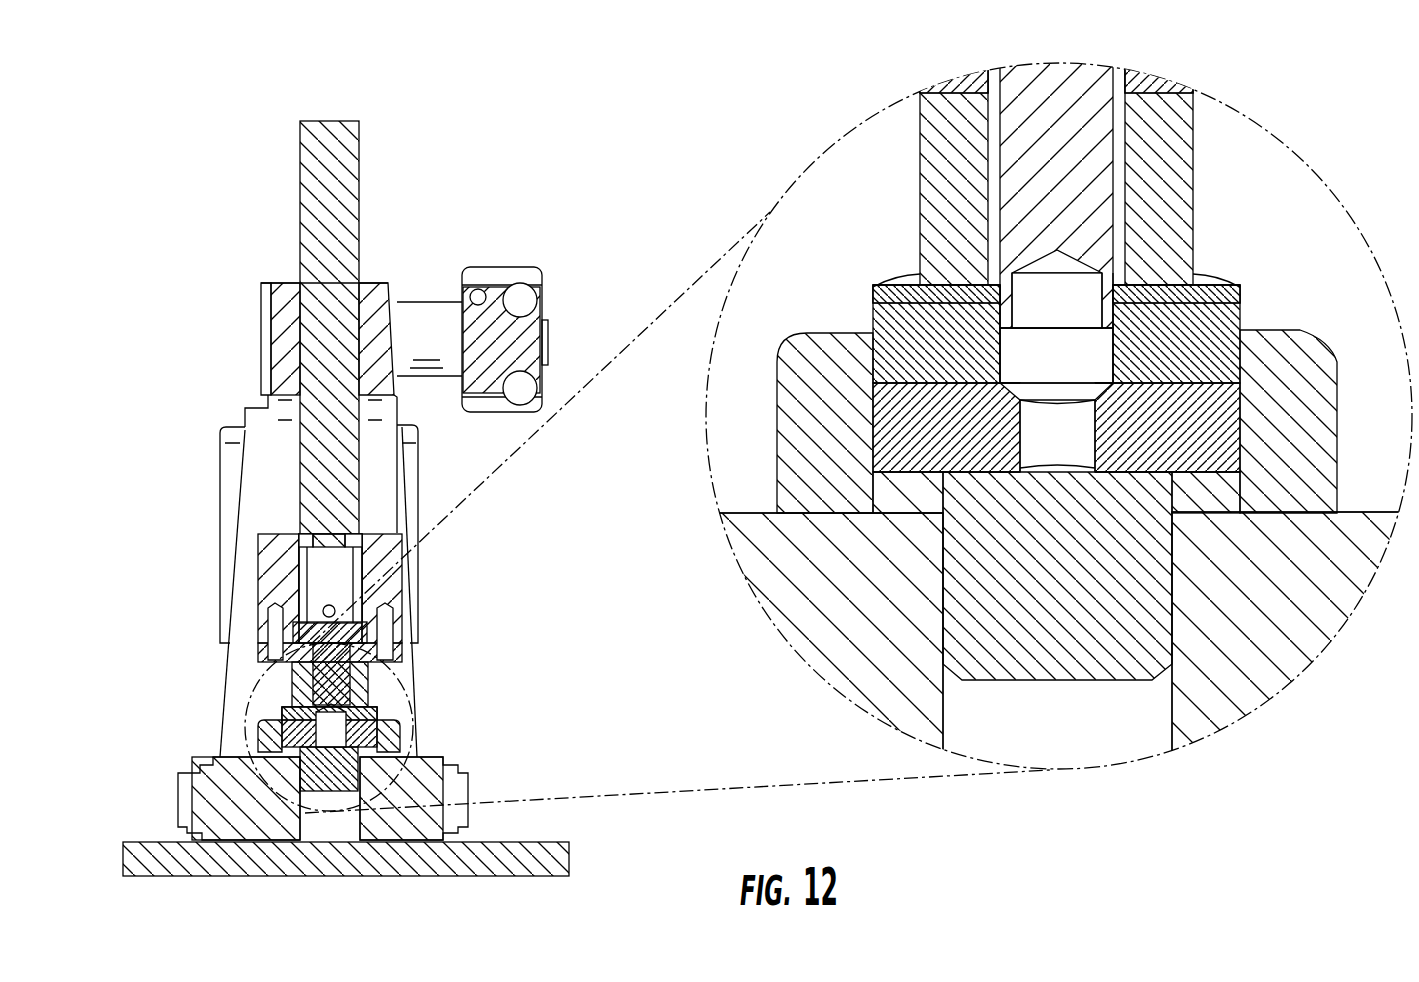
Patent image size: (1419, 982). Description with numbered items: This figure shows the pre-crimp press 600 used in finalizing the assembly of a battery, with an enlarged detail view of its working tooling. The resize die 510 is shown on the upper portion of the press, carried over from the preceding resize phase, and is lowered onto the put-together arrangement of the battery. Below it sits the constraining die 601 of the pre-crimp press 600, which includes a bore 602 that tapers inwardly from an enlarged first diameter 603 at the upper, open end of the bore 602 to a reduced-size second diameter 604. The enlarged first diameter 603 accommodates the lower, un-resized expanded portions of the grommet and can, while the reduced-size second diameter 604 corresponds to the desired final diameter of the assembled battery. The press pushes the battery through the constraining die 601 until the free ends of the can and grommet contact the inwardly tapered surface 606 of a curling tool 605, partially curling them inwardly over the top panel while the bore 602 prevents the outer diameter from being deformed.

The pre-crimp press 600 is at (432, 129).
The resize die 510 is at (947, 193).
The constraining die 601 is at (905, 264).
The bore 602 is at (1076, 349).
The enlarged first diameter 603 is at (1003, 303).
The reduced-size second diameter 604 is at (1113, 371).
The curling tool 605 is at (1243, 427).
The inwardly tapered surface 606 is at (1007, 393).